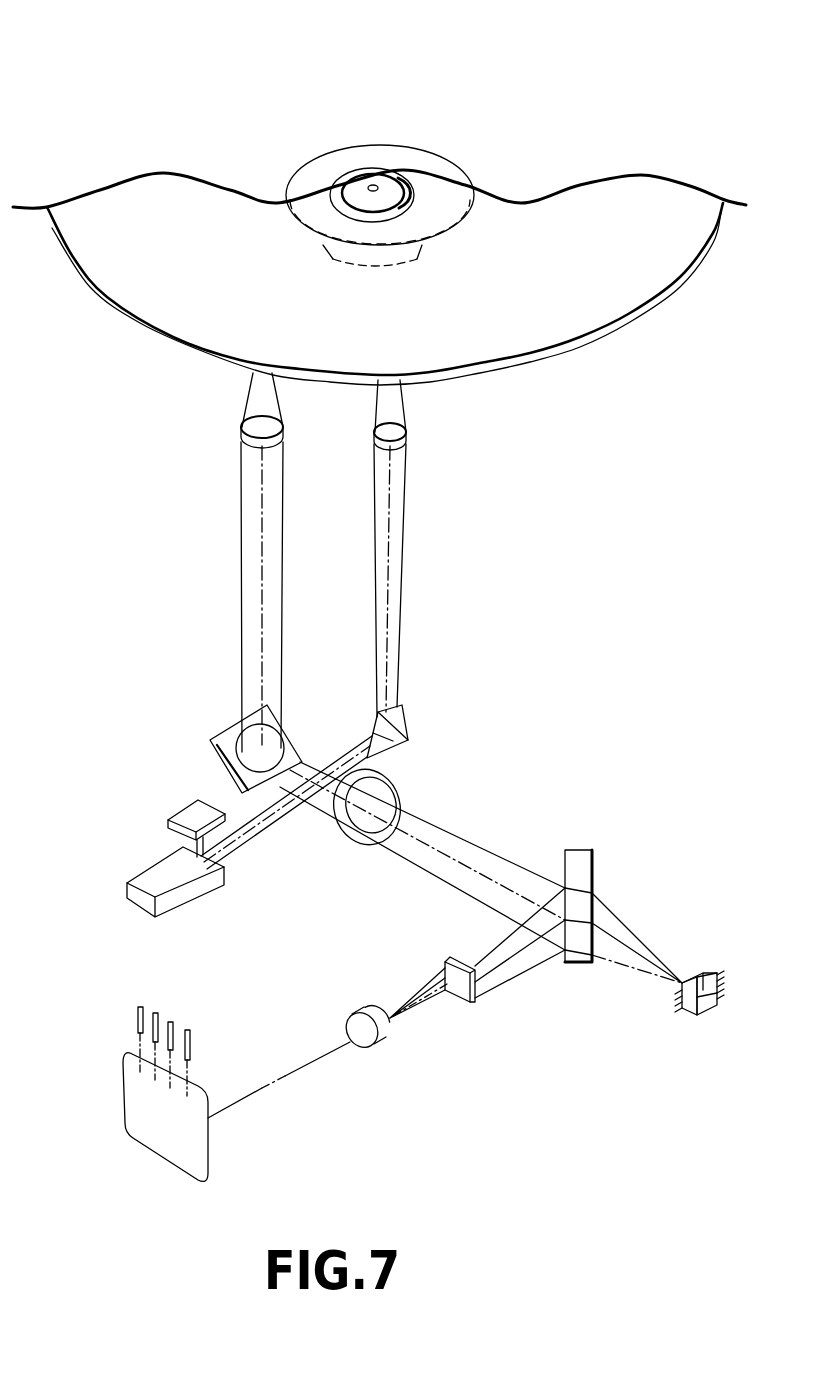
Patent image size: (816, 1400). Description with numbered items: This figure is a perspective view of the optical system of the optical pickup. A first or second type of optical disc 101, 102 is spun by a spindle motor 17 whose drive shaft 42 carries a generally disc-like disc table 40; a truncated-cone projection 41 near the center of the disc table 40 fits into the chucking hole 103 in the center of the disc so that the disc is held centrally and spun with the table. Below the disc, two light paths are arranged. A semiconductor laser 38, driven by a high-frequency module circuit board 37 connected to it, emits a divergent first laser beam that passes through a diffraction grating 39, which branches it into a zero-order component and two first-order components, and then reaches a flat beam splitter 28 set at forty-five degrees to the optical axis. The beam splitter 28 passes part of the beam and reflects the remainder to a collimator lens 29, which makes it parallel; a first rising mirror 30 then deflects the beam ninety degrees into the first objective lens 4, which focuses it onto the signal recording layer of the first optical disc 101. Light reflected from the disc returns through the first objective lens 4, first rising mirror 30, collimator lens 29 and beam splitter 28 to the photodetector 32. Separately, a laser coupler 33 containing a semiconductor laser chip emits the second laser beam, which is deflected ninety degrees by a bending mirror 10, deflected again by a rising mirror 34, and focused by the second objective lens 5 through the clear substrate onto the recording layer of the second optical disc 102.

The first type of optical disc 101 is at (379, 196).
The second type of optical disc 102 is at (185, 237).
The disc table 40 is at (322, 167).
The projection 41 is at (358, 182).
The drive shaft 42 is at (378, 186).
The chucking hole 103 is at (403, 187).
The spindle motor 17 is at (407, 255).
The first objective lens 4 is at (247, 428).
The second objective lens 5 is at (407, 432).
The first rising mirror 30 is at (228, 735).
The rising mirror 34 is at (400, 715).
The laser coupler 33 is at (193, 813).
The bending mirror 10 is at (162, 872).
The collimator lens 29 is at (393, 773).
The flat beam splitter 28 is at (582, 857).
The photodetector 32 is at (707, 970).
The diffraction grating 39 is at (463, 1002).
The semiconductor laser 38 is at (365, 1052).
The high-frequency module circuit board 37 is at (198, 1152).